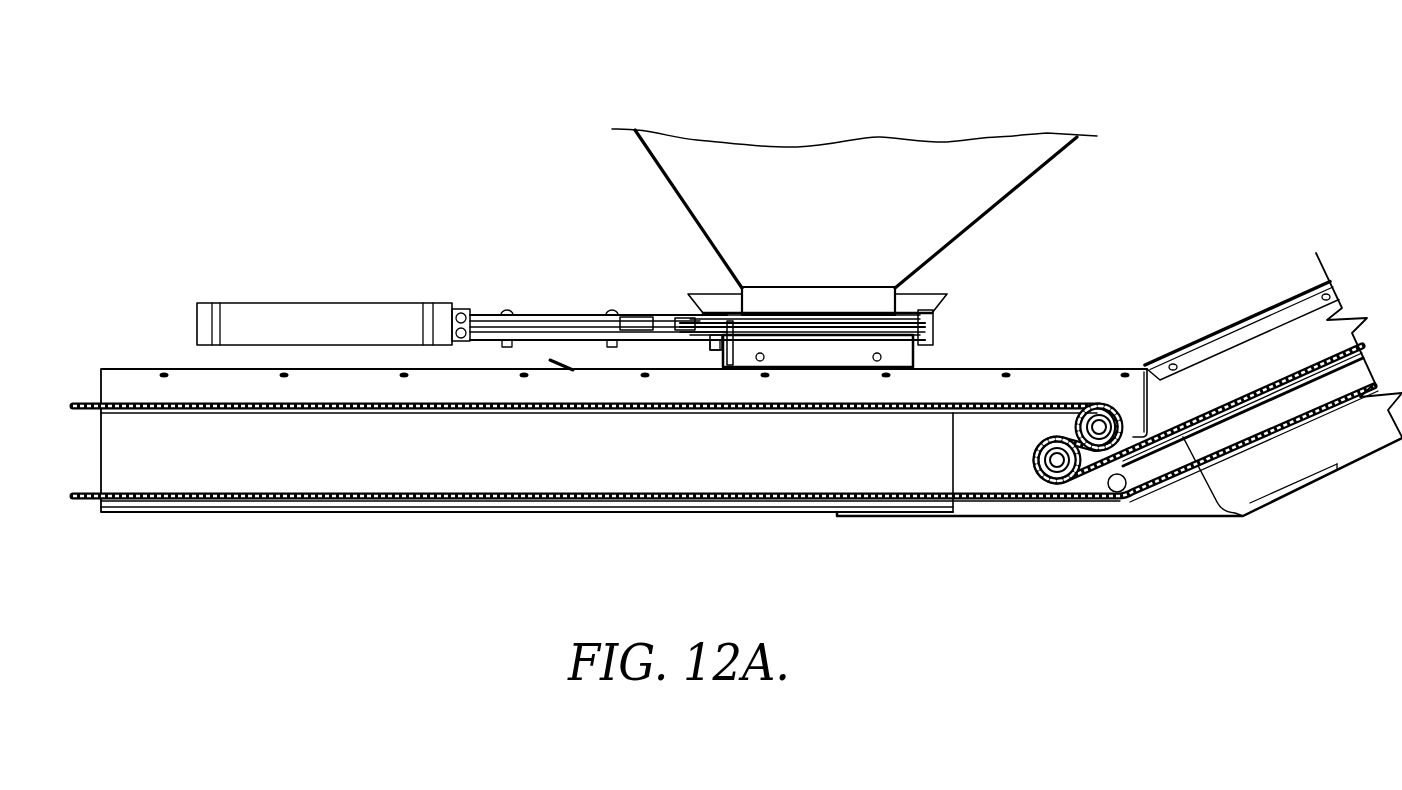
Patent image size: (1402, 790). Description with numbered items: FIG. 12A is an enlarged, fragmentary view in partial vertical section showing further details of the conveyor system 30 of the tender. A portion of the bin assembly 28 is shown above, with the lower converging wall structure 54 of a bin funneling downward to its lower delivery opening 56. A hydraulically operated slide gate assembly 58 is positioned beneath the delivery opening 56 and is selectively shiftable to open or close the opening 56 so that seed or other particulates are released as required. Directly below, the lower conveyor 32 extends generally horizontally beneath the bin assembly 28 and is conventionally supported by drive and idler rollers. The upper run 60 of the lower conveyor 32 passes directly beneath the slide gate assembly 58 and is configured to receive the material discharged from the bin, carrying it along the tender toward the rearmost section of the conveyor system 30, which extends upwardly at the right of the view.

The bin assembly 28 is at (844, 173).
The conveyor system 30 is at (1196, 274).
The lower conveyor 32 is at (972, 392).
The lower converging wall structure 54 is at (695, 184).
The lower delivery opening 56 is at (832, 307).
The slide gate assembly 58 is at (627, 298).
The upper run 60 is at (140, 404).